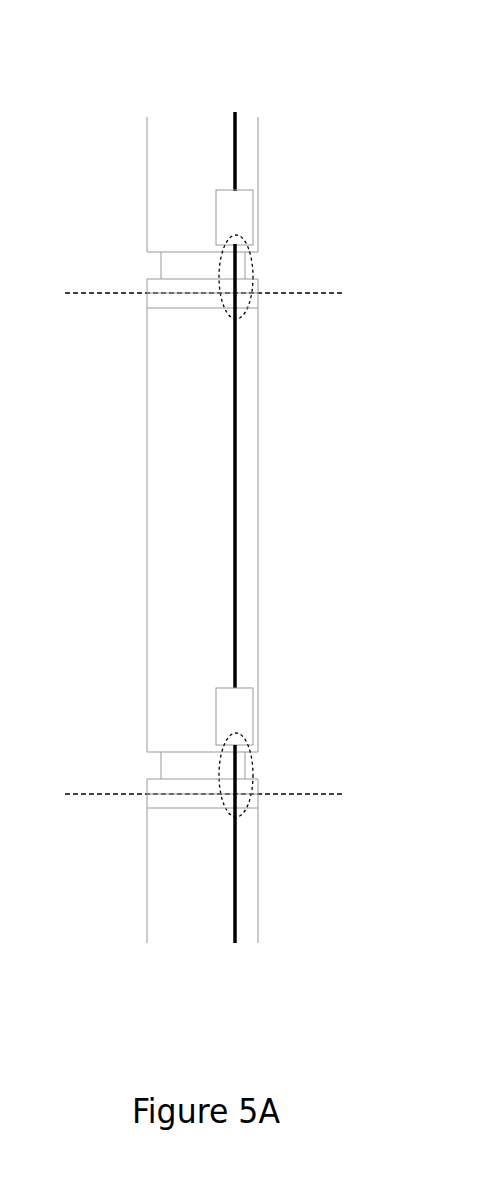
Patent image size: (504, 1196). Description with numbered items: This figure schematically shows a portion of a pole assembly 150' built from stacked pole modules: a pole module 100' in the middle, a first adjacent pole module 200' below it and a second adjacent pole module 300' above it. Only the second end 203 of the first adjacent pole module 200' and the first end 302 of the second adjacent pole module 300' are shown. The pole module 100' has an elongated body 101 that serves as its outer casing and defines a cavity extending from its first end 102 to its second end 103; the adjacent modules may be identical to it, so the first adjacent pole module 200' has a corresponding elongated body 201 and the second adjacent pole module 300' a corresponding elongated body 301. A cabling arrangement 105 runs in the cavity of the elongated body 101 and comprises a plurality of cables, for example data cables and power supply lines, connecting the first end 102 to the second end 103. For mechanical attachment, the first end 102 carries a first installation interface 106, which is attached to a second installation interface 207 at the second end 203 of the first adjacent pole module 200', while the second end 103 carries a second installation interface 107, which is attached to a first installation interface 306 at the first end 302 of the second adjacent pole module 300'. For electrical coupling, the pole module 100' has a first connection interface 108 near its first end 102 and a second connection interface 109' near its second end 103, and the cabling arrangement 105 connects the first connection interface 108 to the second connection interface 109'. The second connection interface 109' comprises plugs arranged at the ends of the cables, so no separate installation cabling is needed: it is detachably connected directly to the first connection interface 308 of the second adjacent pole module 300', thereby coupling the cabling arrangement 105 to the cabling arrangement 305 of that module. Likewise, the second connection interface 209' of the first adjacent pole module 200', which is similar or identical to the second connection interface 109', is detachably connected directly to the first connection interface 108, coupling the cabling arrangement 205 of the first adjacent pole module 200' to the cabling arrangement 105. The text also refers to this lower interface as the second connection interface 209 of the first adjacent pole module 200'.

The pole assembly 150' is at (204, 403).
The second adjacent pole module 300' is at (150, 181).
The second tube wall 301 is at (147, 132).
The cabling arrangement 305 is at (237, 142).
The first connection interface 308 is at (252, 202).
The first end 302 is at (133, 252).
The second connection interface 109' is at (165, 238).
The first installation interface 306 is at (256, 290).
The second installation interface 107 is at (256, 300).
The second end 103 is at (133, 313).
The pole module 100' is at (145, 566).
The elongated body 101 is at (147, 488).
The cabling arrangement 105 is at (237, 395).
The first connection interface 108 is at (252, 705).
The first end 102 is at (133, 752).
The second connection interface 209' is at (163, 739).
The first installation interface 106 is at (257, 787).
The second installation interface 207 is at (257, 800).
The second end 203 is at (135, 807).
The first adjacent pole module 200' is at (144, 906).
The third tube wall 201 is at (147, 907).
The second connection interface 209 is at (285, 866).
The cabling arrangement 205 is at (237, 915).